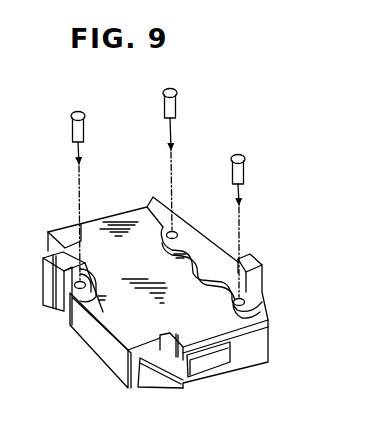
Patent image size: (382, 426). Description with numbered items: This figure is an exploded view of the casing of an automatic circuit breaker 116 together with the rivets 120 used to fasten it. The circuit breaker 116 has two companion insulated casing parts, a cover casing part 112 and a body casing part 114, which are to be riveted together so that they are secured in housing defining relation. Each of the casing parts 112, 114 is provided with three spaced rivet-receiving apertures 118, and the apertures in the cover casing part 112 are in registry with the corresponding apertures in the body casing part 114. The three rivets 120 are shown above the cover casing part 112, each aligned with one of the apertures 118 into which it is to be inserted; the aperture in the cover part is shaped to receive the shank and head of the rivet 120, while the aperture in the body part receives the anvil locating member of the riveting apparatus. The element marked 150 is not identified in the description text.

The cover casing part 112 is at (110, 212).
The body casing part 114 is at (95, 352).
The automatic circuit breaker 116 is at (91, 333).
The rivet-receiving apertures 118 is at (231, 302).
The rivets 120 is at (72, 114).
The assembly 150 is at (11, 201).